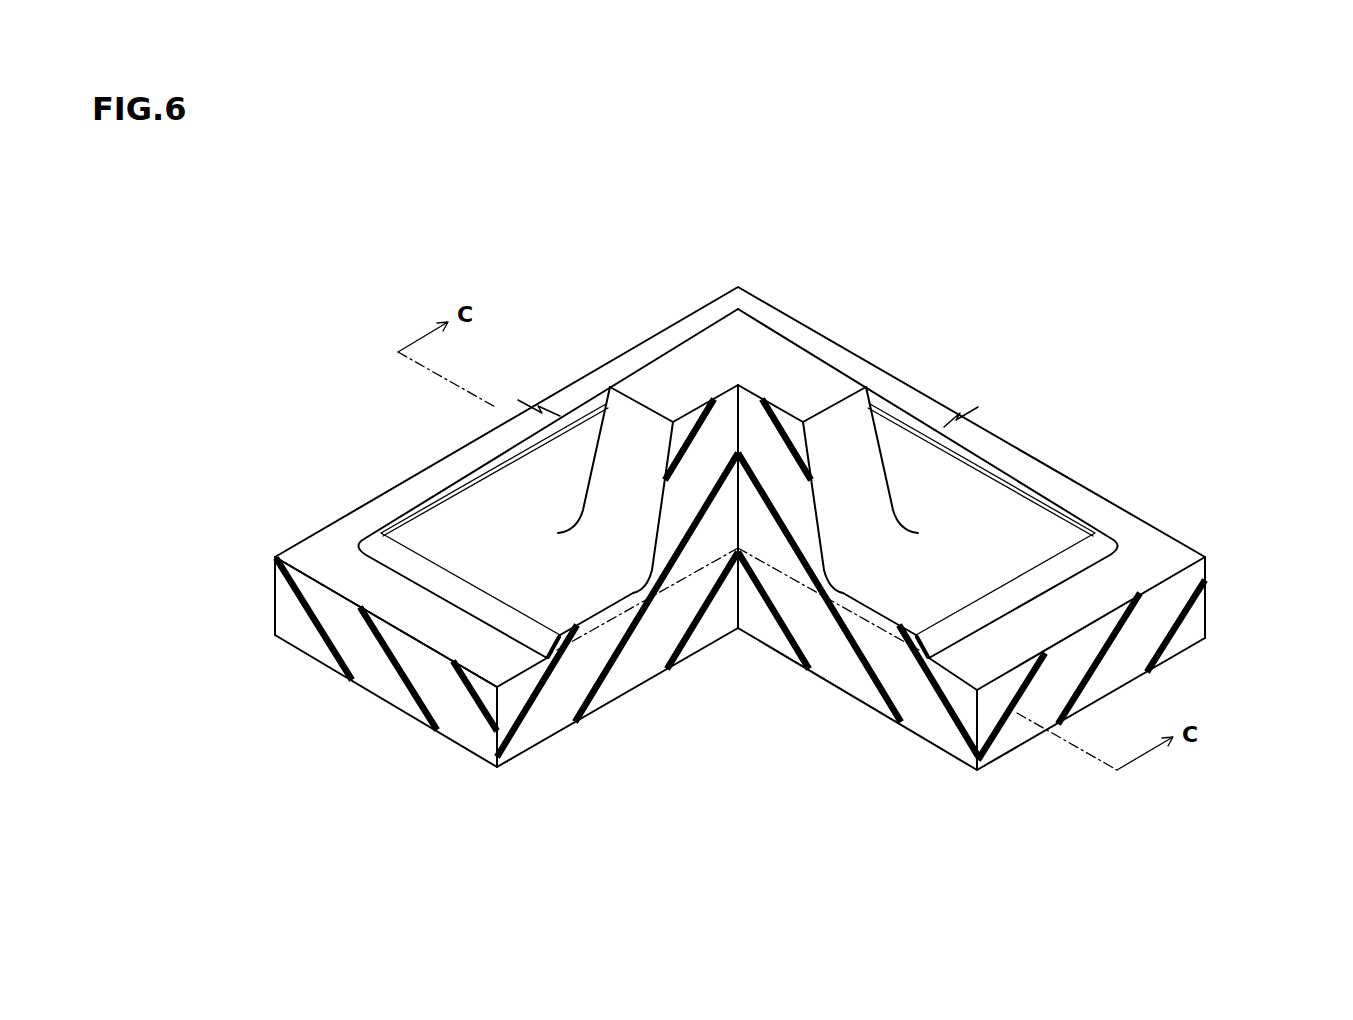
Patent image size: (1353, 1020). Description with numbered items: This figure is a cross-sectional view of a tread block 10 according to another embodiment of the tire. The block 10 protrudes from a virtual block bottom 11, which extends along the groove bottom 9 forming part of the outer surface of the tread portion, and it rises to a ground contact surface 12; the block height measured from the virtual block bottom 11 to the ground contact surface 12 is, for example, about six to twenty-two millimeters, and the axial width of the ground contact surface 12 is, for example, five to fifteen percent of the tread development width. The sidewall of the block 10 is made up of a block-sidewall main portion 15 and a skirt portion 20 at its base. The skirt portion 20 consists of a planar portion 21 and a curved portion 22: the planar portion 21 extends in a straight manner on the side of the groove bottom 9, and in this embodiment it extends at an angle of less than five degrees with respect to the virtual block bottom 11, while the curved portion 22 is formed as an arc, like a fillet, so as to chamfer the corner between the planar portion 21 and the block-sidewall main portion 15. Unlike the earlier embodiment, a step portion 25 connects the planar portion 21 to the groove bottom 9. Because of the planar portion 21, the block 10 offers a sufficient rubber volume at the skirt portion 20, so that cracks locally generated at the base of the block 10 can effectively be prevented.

The groove bottom 9 is at (373, 590).
The block 10 is at (585, 398).
The virtual block bottom 11 is at (683, 578).
The ground contact surface 12 is at (773, 355).
The block-sidewall main portion 15 is at (593, 540).
The skirt portion 20 is at (333, 422).
The planar portion 21 is at (530, 583).
The curved portion 22 is at (627, 460).
The step portion 25 is at (450, 590).